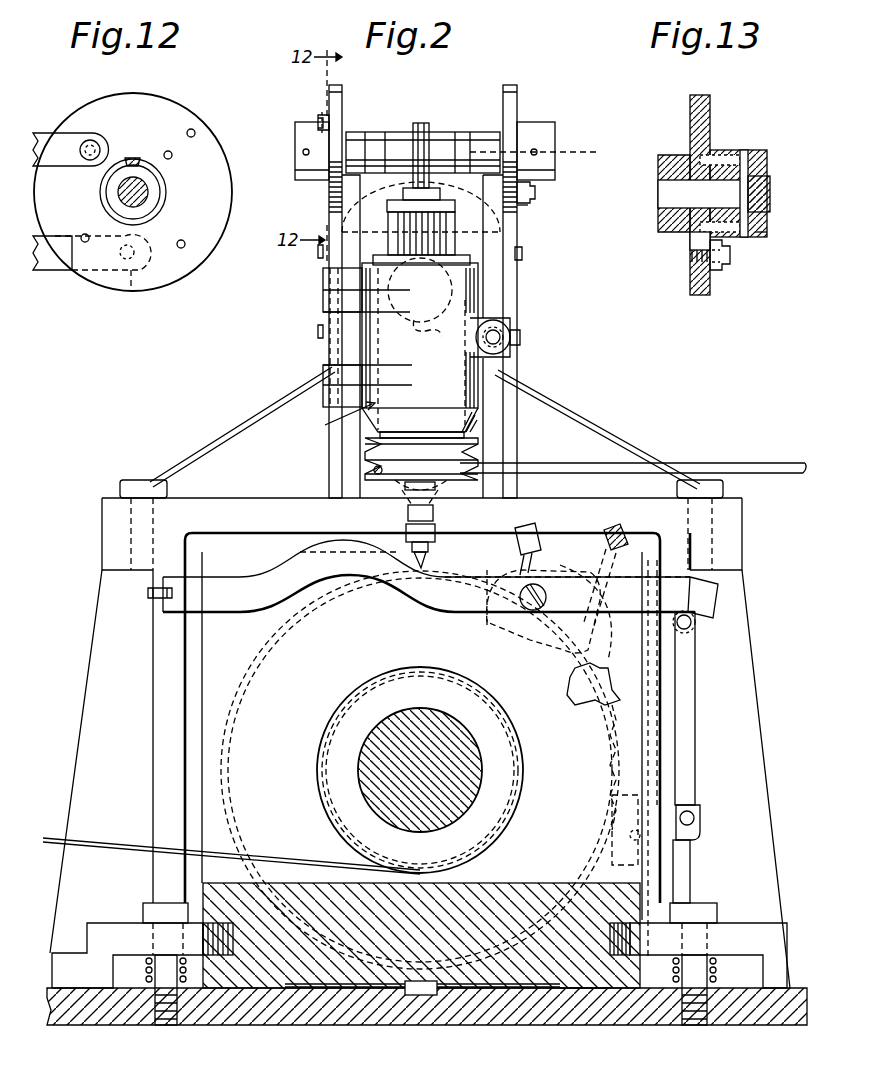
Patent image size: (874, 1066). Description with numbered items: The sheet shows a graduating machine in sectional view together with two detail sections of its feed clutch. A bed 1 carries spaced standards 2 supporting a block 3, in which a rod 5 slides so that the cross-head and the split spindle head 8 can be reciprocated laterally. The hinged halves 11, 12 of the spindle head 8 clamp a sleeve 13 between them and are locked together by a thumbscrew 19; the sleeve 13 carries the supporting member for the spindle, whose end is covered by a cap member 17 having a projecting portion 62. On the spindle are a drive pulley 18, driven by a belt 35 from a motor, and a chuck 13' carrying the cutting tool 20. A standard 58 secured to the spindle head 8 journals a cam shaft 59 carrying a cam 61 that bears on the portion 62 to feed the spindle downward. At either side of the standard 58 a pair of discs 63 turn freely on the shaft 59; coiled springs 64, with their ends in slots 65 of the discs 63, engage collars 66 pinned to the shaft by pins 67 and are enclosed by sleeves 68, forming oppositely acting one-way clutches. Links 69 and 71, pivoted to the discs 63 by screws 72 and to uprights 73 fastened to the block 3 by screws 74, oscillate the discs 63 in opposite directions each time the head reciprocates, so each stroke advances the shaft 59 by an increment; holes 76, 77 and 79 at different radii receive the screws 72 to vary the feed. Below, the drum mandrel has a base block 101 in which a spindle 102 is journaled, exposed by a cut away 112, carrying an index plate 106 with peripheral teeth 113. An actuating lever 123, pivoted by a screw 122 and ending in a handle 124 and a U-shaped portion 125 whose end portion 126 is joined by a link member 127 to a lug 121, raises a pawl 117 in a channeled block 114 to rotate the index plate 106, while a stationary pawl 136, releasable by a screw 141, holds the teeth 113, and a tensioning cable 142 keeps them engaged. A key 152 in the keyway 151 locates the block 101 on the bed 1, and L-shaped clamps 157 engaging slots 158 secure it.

In FIG. 2, the base or bed 1 is at (345, 1013).
In FIG. 2, the standards 2 is at (100, 648).
In FIG. 2, the block 3 is at (275, 425).
In FIG. 2, the rod 5 is at (455, 425).
In FIG. 2, the spindle head 8 is at (344, 417).
In FIG. 2, the hinged half of spindle head 11 is at (425, 320).
In FIG. 2, the hinged half of spindle head 12 is at (480, 312).
In FIG. 2, the sleeve 13 is at (544, 150).
In FIG. 2, the chuck 13' is at (441, 517).
In FIG. 2, the cap member 17 is at (445, 222).
In FIG. 12, the drive pulley 18 is at (170, 160).
In FIG. 2, the drive pulley 18 is at (480, 447).
In FIG. 2, the thumbscrew 19 is at (512, 338).
In FIG. 2, the cutting tool 20 is at (426, 548).
In FIG. 2, the belt 35 is at (735, 463).
In FIG. 13, the standard 58 is at (662, 158).
In FIG. 2, the standard 58 is at (462, 133).
In FIG. 12, the cam shaft 59 is at (150, 190).
In FIG. 13, the cam shaft 59 is at (665, 188).
In FIG. 2, the cam 61 is at (425, 123).
In FIG. 2, the portion of cap member 62 is at (440, 193).
In FIG. 12, the discs 63 is at (207, 246).
In FIG. 13, the discs 63 is at (712, 290).
In FIG. 2, the discs 63 is at (342, 92).
In FIG. 12, the coiled springs 64 is at (134, 157).
In FIG. 13, the coiled springs 64 is at (722, 152).
In FIG. 13, the slots 65 is at (700, 236).
In FIG. 13, the collar 66 is at (768, 166).
In FIG. 13, the pins 67 is at (753, 192).
In FIG. 2, the pins 67 is at (303, 152).
In FIG. 13, the sleeve 68 is at (760, 233).
In FIG. 2, the sleeve 68 is at (300, 170).
In FIG. 12, the link 69 is at (70, 138).
In FIG. 2, the link 69 is at (321, 115).
In FIG. 12, the link 71 is at (52, 272).
In FIG. 13, the link 71 is at (712, 272).
In FIG. 2, the link 71 is at (524, 204).
In FIG. 12, the screws 72 is at (91, 140).
In FIG. 13, the screws 72 is at (732, 252).
In FIG. 2, the screws 72 is at (318, 121).
In FIG. 2, the uprights 73 is at (335, 257).
In FIG. 2, the screws 74 is at (523, 252).
In FIG. 12, the hole 76 is at (185, 245).
In FIG. 12, the hole 77 is at (86, 234).
In FIG. 12, the holes 79 is at (194, 128).
In FIG. 2, the base block 101 is at (587, 1002).
In FIG. 2, the spindle 102 is at (473, 745).
In FIG. 2, the index plate 106 is at (596, 666).
In FIG. 2, the cut away 112 is at (212, 704).
In FIG. 2, the teeth 113 is at (513, 793).
In FIG. 2, the channeled block 114 is at (692, 878).
In FIG. 2, the spring biased pawl 117 is at (612, 822).
In FIG. 2, the lug 121 is at (700, 828).
In FIG. 2, the screw 122 is at (533, 611).
In FIG. 2, the actuating lever 123 is at (238, 605).
In FIG. 2, the handle 124 is at (150, 600).
In FIG. 2, the U-shaped portion 125 is at (700, 606).
In FIG. 2, the end portion 126 is at (722, 583).
In FIG. 2, the link member 127 is at (697, 700).
In FIG. 2, the stationary pawl 136 is at (488, 612).
In FIG. 2, the screw 141 is at (606, 534).
In FIG. 2, the tensioning cable 142 is at (293, 858).
In FIG. 2, the keyway 151 is at (431, 995).
In FIG. 2, the key 152 is at (413, 995).
In FIG. 2, the L-shaped clamps 157 is at (105, 921).
In FIG. 2, the slots 158 is at (228, 952).